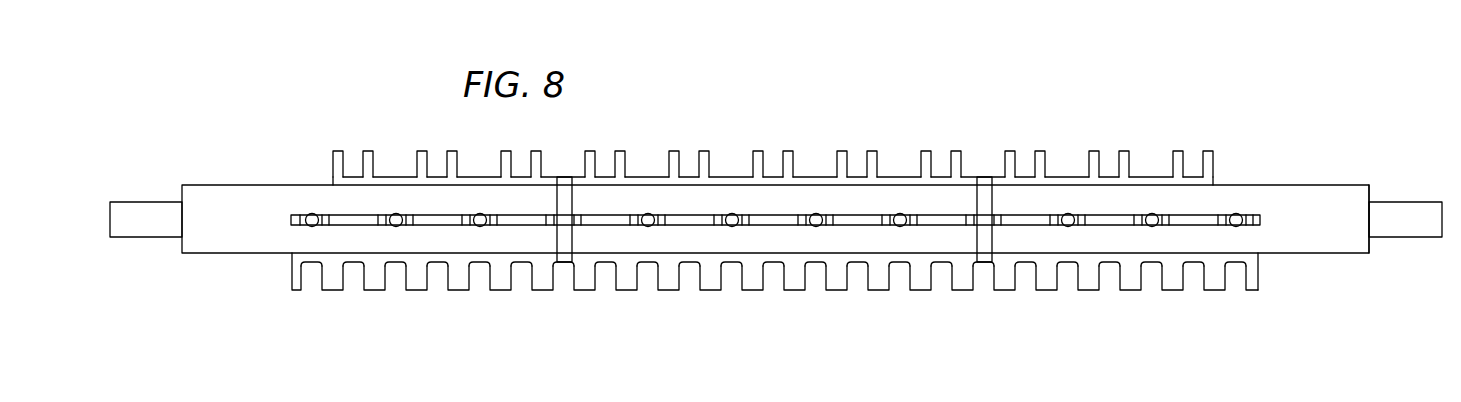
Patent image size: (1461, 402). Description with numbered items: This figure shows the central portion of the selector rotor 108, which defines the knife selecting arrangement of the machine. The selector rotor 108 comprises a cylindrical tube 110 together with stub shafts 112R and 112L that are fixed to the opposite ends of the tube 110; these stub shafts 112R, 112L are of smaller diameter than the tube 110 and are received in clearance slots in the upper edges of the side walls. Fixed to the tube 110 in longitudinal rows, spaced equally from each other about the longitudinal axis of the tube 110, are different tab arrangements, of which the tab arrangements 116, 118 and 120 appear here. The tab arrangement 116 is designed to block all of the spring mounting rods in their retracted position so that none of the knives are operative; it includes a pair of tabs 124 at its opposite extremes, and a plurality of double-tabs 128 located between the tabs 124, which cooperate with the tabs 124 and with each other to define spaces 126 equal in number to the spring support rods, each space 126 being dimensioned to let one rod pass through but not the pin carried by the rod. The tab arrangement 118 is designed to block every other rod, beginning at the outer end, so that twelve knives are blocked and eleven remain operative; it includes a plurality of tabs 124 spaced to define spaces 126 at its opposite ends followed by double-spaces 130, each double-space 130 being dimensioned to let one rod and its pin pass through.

The selector rotor 108 is at (1312, 176).
The cylindrical tube 110 is at (1345, 185).
The stub shaft 112L is at (148, 238).
The stub shaft 112R is at (1403, 238).
The tab arrangement 116 is at (1273, 277).
The tab arrangement 118 is at (1274, 225).
The tab arrangement 120 is at (1231, 172).
The tab 124 is at (705, 152).
The space 126 is at (772, 162).
The double-tab 128 is at (710, 290).
The double-space 130 is at (730, 162).